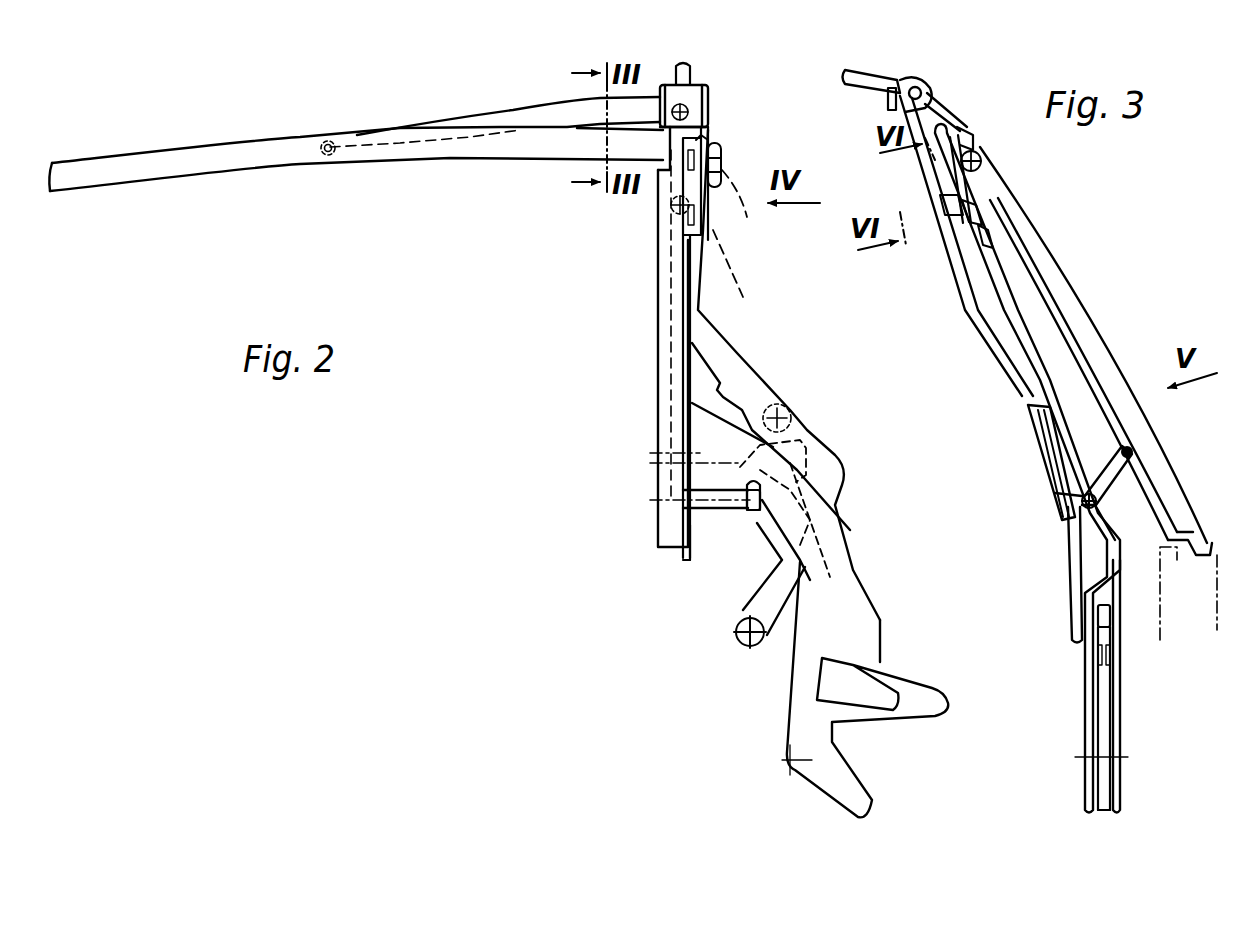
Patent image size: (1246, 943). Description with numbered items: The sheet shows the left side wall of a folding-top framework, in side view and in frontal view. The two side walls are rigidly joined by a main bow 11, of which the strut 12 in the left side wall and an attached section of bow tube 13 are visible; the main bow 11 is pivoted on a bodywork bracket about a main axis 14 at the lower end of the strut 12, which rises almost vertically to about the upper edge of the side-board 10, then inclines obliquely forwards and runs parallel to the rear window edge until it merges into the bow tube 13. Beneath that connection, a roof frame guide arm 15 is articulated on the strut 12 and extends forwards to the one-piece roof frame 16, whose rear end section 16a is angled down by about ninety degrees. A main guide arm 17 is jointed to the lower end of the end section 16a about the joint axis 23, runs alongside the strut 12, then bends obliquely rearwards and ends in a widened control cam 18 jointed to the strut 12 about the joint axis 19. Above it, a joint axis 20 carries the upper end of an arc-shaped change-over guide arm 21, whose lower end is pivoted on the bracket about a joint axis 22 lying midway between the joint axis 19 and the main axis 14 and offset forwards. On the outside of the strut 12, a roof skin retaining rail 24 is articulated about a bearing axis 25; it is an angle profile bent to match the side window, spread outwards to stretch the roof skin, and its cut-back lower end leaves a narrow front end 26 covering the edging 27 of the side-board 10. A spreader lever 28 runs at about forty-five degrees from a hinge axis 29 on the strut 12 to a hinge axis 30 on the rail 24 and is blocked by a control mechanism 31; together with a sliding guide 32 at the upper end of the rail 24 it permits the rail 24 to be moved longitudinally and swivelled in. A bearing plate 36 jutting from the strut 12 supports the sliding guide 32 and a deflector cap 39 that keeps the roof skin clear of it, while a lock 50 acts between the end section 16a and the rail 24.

In FIG. 3, the side-board 10 is at (1188, 593).
In FIG. 2, the main bow 11 is at (712, 112).
In FIG. 3, the main bow 11 is at (912, 72).
In FIG. 2, the strut 12 is at (700, 432).
In FIG. 3, the strut 12 is at (1017, 320).
In FIG. 2, the bow tube 13 is at (695, 70).
In FIG. 3, the bow tube 13 is at (868, 86).
In FIG. 2, the main axis 14 is at (790, 762).
In FIG. 3, the main axis 14 is at (1073, 760).
In FIG. 2, the roof frame guide arm 15 is at (520, 120).
In FIG. 3, the roof frame guide arm 15 is at (893, 110).
In FIG. 2, the roof frame 16 is at (172, 187).
In FIG. 3, the roof frame 16 is at (940, 172).
In FIG. 2, the rear end section 16a is at (744, 245).
In FIG. 3, the rear end section 16a is at (960, 200).
In FIG. 2, the main guide arm 17 is at (740, 353).
In FIG. 3, the main guide arm 17 is at (967, 283).
In FIG. 2, the control cam 18 is at (752, 515).
In FIG. 3, the control cam 18 is at (1047, 450).
In FIG. 2, the joint axis 19 is at (827, 520).
In FIG. 3, the joint axis 19 is at (1057, 517).
In FIG. 2, the joint axis 20 is at (780, 417).
In FIG. 3, the joint axis 20 is at (1026, 418).
In FIG. 2, the change-over guide arm 21 is at (745, 635).
In FIG. 3, the change-over guide arm 21 is at (1050, 590).
In FIG. 2, the joint axis 22 is at (760, 648).
In FIG. 3, the joint axis 22 is at (1063, 628).
In FIG. 2, the joint axis 23 is at (666, 226).
In FIG. 3, the joint axis 23 is at (942, 215).
In FIG. 2, the roof skin retaining rail 24 is at (658, 360).
In FIG. 3, the roof skin retaining rail 24 is at (1083, 292).
In FIG. 2, the bearing axis 25 is at (722, 183).
In FIG. 3, the bearing axis 25 is at (995, 215).
In FIG. 2, the front end 26 is at (677, 560).
In FIG. 3, the front end 26 is at (1208, 546).
In FIG. 3, the edging 27 is at (1160, 577).
In FIG. 3, the spreader lever 28 is at (1140, 475).
In FIG. 2, the hinge axis 29 is at (657, 502).
In FIG. 3, the hinge axis 29 is at (1090, 494).
In FIG. 2, the hinge axis 30 is at (657, 455).
In FIG. 3, the hinge axis 30 is at (1133, 448).
In FIG. 2, the control mechanism 31 is at (822, 455).
In FIG. 3, the control mechanism 31 is at (1055, 495).
In FIG. 2, the sliding guide 32 is at (710, 140).
In FIG. 3, the sliding guide 32 is at (982, 155).
In FIG. 3, the bearing plate 36 is at (962, 124).
In FIG. 2, the deflector cap 39 is at (712, 110).
In FIG. 3, the deflector cap 39 is at (960, 112).
In FIG. 2, the lock 50 is at (668, 205).
In FIG. 3, the lock 50 is at (998, 240).